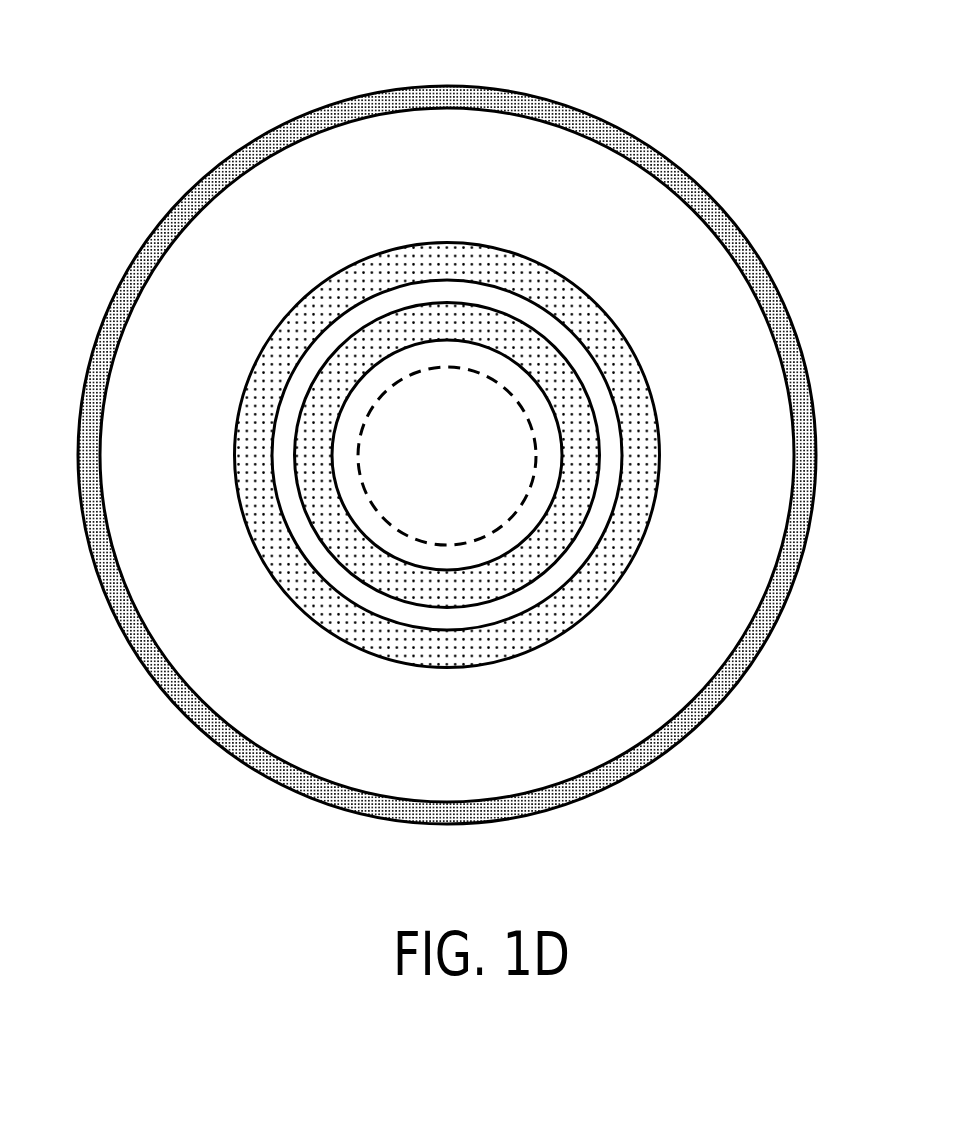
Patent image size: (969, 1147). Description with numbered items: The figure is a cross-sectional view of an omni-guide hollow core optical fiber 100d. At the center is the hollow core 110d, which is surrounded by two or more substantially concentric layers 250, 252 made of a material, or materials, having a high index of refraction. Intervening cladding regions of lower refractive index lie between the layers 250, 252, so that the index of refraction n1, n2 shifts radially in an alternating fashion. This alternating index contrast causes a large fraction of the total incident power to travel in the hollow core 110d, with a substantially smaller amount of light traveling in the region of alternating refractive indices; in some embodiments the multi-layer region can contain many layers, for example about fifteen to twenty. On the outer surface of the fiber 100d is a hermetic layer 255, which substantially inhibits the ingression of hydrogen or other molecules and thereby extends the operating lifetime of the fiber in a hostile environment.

The omni-guide fiber 100d is at (679, 64).
The hermetic layer 255 is at (730, 223).
The concentric layer 250 is at (283, 348).
The concentric layer 252 is at (316, 514).
The hollow core 110d is at (477, 478).
The index of refraction n1 is at (548, 367).
The index of refraction n2 is at (543, 500).